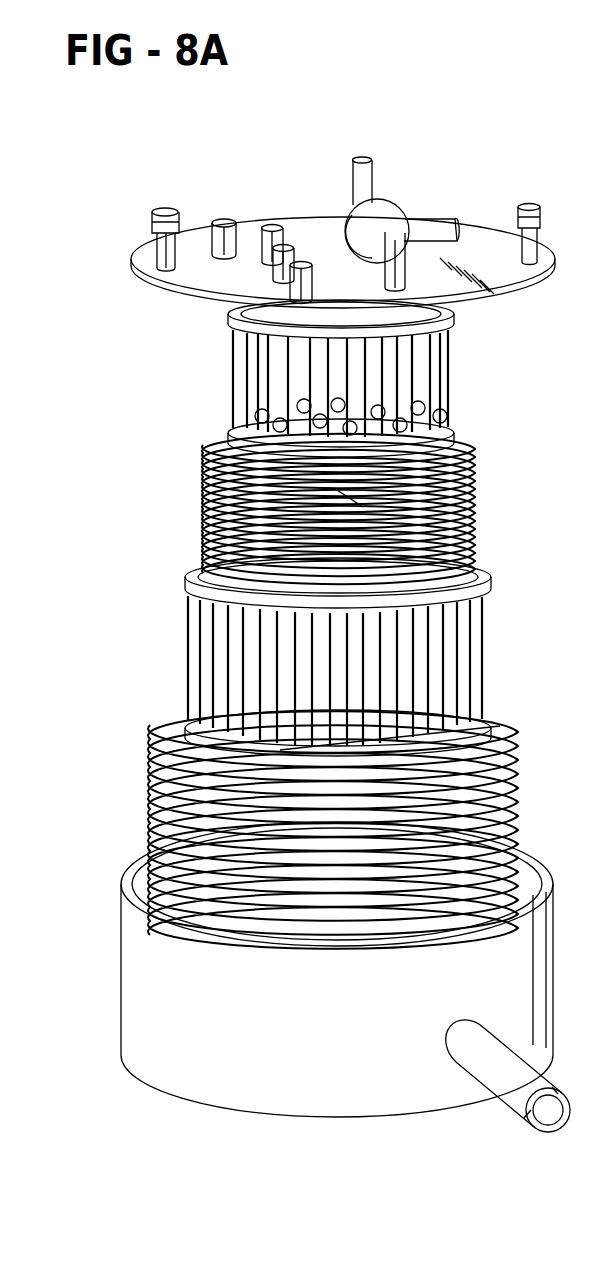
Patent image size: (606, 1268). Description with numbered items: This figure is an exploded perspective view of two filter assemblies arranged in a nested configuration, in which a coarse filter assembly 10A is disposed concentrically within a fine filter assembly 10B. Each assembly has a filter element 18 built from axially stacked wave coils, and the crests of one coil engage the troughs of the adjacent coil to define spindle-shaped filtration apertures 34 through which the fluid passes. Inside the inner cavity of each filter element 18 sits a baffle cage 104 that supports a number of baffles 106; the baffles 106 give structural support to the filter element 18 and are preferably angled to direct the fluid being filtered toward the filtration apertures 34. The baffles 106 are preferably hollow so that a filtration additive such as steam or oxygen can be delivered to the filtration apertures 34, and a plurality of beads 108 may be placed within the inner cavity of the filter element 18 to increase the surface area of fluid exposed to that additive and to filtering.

The coarse filter assembly 10A is at (108, 507).
The fine filter assembly 10B is at (94, 802).
The filter element 18 is at (474, 498).
The filtration aperture 34 is at (476, 514).
The baffle cage 104 is at (336, 528).
The baffle 106 is at (228, 366).
The beads 108 is at (310, 408).